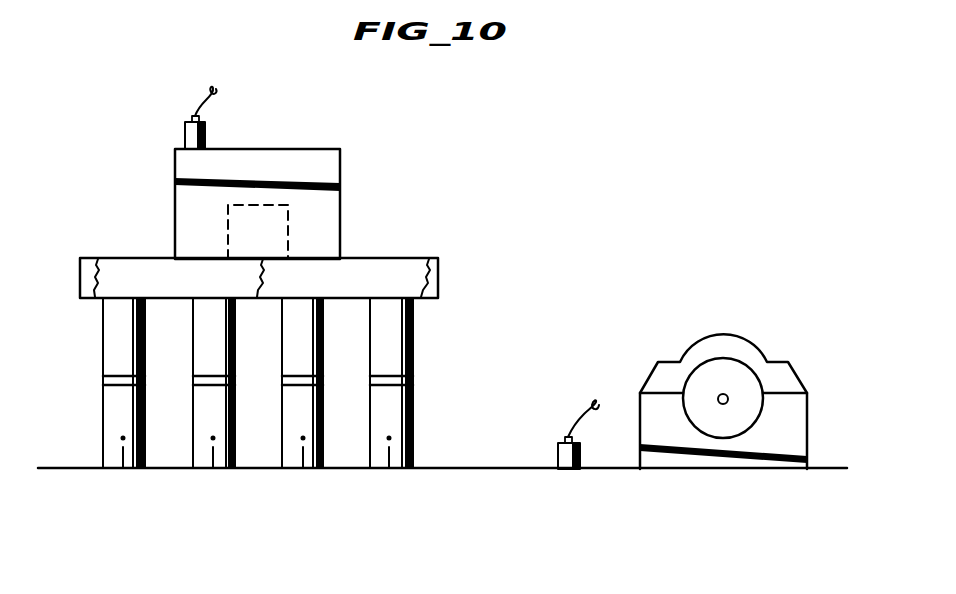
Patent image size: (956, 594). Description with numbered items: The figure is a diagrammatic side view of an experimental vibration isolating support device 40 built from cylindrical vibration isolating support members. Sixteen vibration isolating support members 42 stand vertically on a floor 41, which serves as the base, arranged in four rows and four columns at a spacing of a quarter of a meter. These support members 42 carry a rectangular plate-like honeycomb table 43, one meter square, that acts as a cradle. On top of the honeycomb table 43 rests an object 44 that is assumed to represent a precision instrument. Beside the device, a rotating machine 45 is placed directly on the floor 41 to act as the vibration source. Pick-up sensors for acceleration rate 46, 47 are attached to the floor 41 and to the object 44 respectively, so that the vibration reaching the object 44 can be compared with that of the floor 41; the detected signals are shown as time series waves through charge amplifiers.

The vibration isolating support device 40 is at (460, 260).
The floor 41 is at (478, 467).
The vibration isolating support members 42 is at (103, 400).
The honeycomb table 43 is at (135, 258).
The object 44 is at (293, 149).
The rotating machine 45 is at (721, 335).
The pick-up sensor for acceleration rate 46 is at (558, 451).
The pick-up sensor for acceleration rate 47 is at (185, 135).